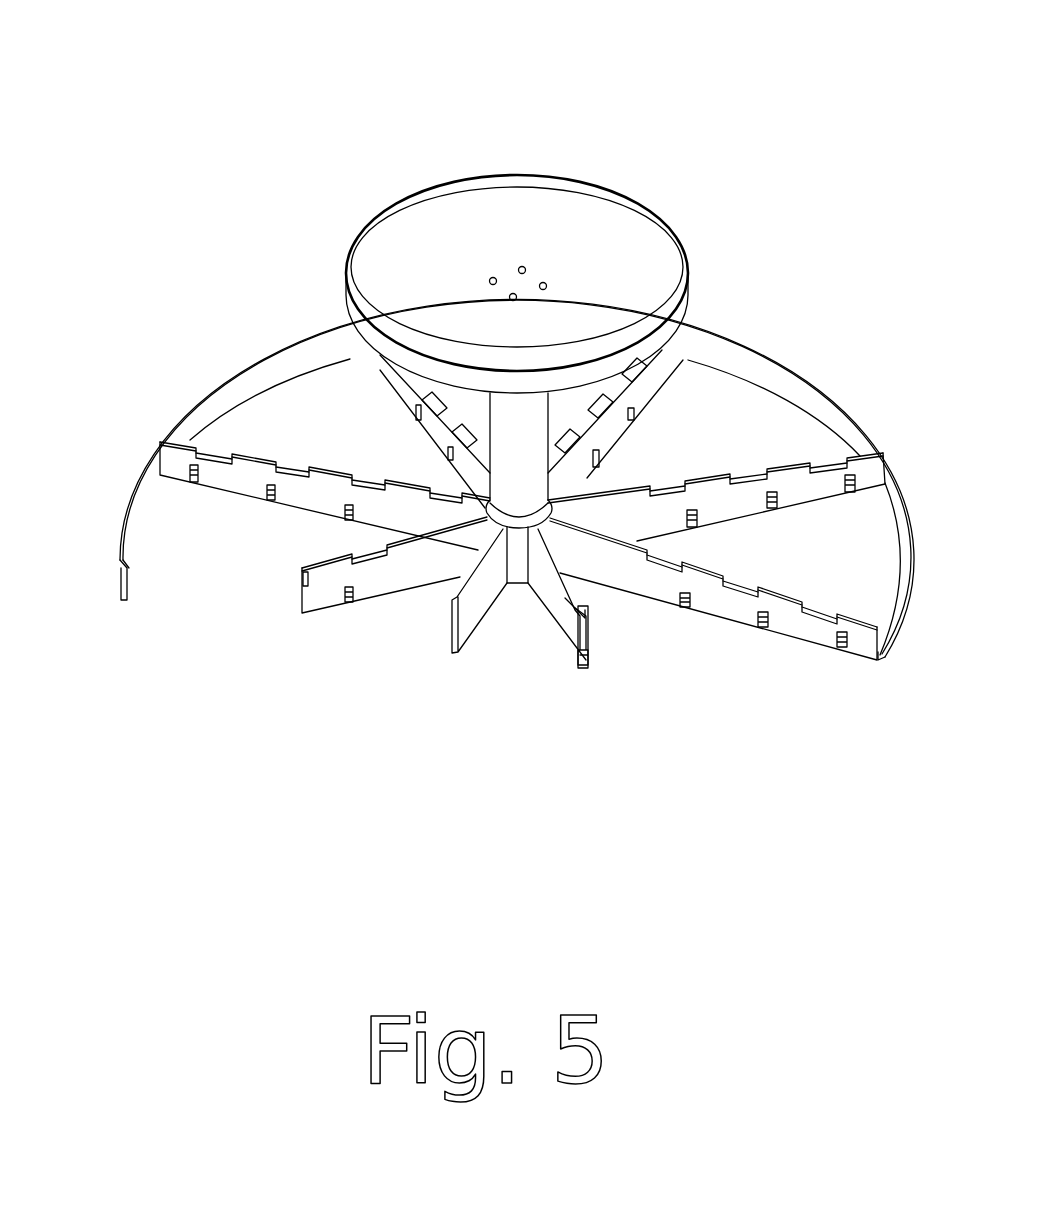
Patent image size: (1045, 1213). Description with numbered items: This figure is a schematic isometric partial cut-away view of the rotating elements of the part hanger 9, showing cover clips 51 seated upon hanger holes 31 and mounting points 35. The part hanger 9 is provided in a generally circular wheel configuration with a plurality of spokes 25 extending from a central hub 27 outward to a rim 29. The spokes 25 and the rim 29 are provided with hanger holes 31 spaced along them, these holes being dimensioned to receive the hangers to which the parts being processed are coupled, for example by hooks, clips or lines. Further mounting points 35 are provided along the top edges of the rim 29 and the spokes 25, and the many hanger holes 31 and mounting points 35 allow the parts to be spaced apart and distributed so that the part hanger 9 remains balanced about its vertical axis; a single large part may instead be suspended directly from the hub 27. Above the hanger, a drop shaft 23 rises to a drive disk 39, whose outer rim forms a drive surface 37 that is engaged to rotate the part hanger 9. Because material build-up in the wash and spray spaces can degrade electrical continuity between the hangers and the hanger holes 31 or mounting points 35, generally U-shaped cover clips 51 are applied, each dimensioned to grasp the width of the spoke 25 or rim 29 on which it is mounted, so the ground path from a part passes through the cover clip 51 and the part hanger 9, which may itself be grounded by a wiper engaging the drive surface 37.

The part hanger 9 is at (501, 125).
The drop shaft 23 is at (520, 437).
The spoke 25 is at (322, 598).
The hub 27 is at (517, 565).
The rim 29 is at (226, 399).
The hanger hole 31 is at (683, 600).
The mounting point 35 is at (585, 615).
The drive surface 37 is at (360, 318).
The drive disk 39 is at (631, 255).
The cover clip 51 is at (293, 478).